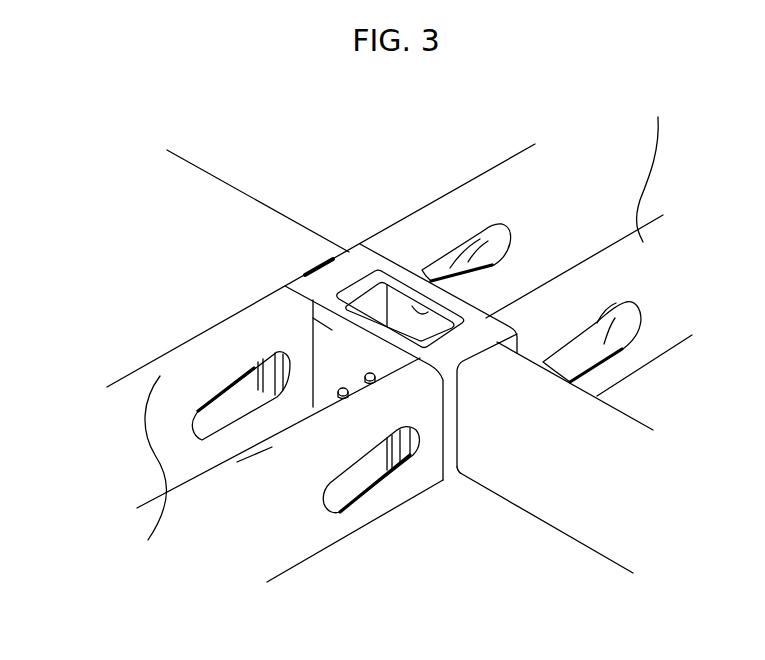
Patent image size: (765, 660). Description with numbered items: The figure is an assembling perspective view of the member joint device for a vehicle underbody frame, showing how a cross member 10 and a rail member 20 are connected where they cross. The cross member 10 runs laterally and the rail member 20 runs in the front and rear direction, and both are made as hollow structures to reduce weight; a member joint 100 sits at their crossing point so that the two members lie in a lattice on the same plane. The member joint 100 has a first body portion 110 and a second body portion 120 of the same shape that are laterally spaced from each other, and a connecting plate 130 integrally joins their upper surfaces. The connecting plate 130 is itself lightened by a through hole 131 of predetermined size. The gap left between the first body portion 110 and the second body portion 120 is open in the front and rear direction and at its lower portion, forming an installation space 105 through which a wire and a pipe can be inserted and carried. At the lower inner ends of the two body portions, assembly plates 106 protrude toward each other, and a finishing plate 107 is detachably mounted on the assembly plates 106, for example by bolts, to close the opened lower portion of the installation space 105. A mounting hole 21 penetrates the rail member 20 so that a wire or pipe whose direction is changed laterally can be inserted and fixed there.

The cross member 10 is at (193, 178).
The rail member 20 is at (535, 160).
The mounting hole 21 is at (228, 400).
The member joint 100 is at (337, 204).
The installation space 105 is at (312, 340).
The assembly plate 106 is at (313, 410).
The finishing plate 107 is at (377, 476).
The first body portion 110 is at (326, 256).
The second body portion 120 is at (492, 318).
The connecting plate 130 is at (368, 277).
The through hole 131 is at (403, 291).